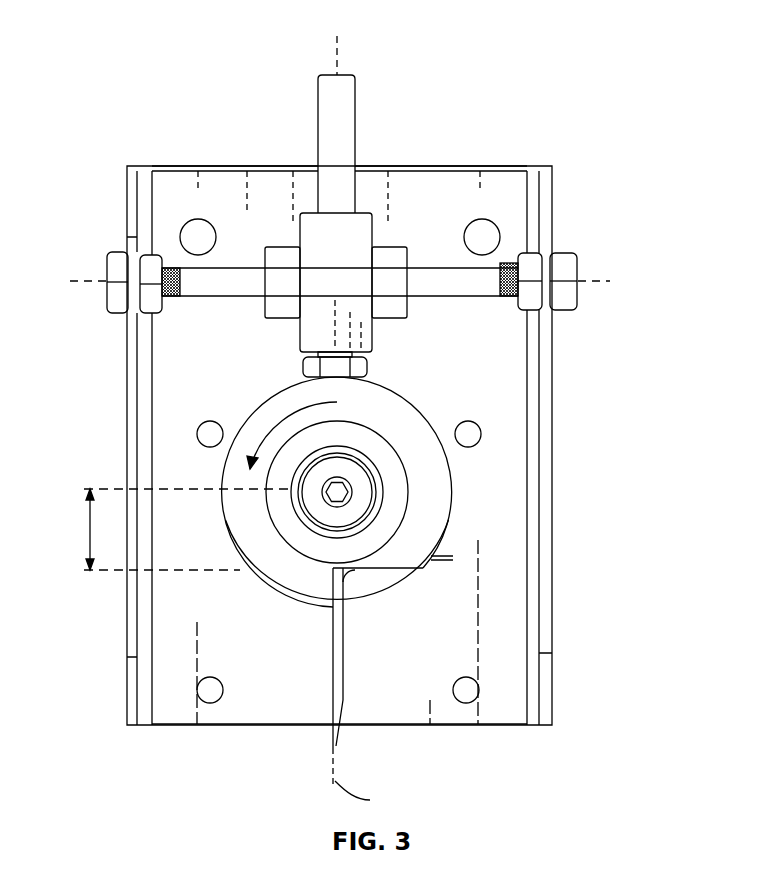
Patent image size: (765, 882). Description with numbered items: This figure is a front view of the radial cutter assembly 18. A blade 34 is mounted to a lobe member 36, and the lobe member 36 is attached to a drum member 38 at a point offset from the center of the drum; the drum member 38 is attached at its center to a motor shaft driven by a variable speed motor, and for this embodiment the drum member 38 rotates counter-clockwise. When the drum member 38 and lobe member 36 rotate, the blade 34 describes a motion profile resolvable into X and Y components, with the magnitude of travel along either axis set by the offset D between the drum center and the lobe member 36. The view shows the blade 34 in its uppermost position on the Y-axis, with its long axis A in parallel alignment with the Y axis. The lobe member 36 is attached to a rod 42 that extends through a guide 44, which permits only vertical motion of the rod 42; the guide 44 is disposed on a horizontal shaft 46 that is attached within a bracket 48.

The radial cutter assembly 18 is at (617, 76).
The blade 34 is at (338, 738).
The lobe member 36 is at (438, 468).
The drum member 38 is at (425, 607).
The rod 42 is at (356, 86).
The guide 44 is at (341, 228).
The horizontal shaft 46 is at (424, 213).
The bracket 48 is at (551, 366).